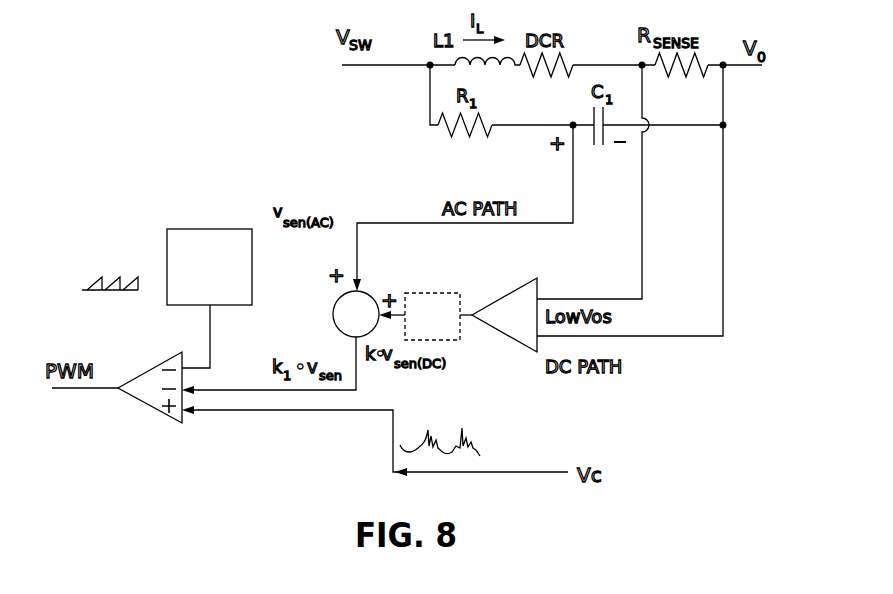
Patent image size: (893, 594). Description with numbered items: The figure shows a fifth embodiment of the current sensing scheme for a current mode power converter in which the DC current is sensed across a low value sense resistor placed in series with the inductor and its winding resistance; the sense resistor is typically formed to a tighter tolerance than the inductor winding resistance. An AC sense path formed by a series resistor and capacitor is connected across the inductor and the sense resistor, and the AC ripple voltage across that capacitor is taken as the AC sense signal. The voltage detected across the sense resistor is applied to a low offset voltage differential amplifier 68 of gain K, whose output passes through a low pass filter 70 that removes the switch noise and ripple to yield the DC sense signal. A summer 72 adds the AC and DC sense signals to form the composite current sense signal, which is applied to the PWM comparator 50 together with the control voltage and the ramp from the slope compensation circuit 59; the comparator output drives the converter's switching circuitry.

The PWM comparator 50 is at (156, 411).
The slope compensation circuit 59 is at (167, 254).
The low offset voltage differential amplifier 68 is at (513, 339).
The low pass filter 70 is at (443, 293).
The summer 72 is at (332, 315).